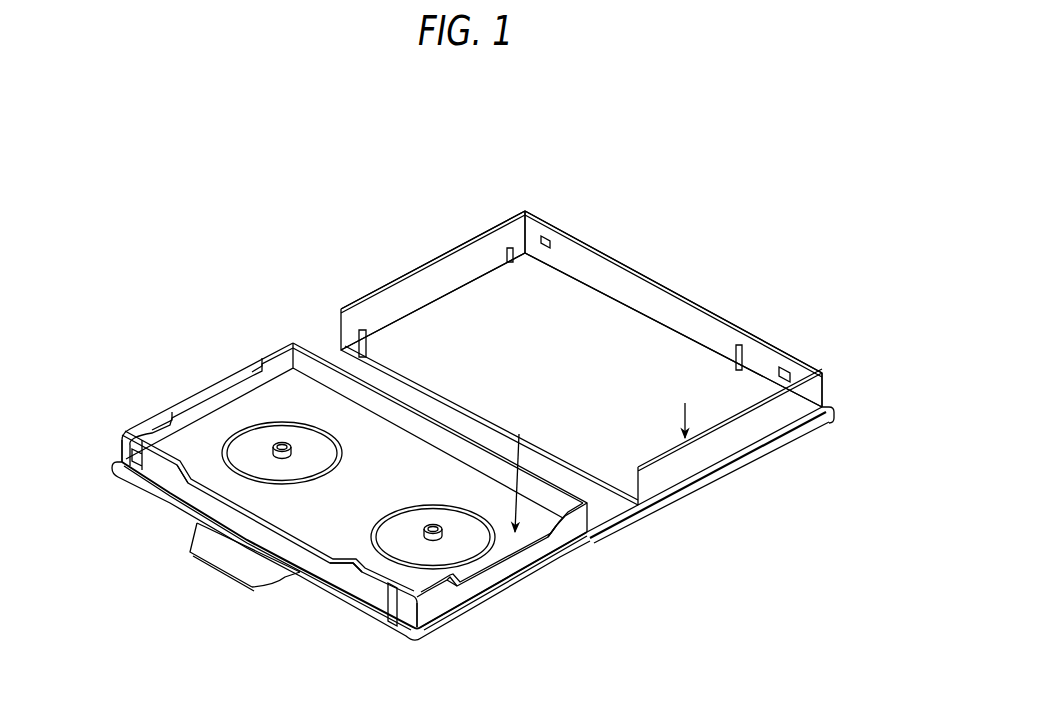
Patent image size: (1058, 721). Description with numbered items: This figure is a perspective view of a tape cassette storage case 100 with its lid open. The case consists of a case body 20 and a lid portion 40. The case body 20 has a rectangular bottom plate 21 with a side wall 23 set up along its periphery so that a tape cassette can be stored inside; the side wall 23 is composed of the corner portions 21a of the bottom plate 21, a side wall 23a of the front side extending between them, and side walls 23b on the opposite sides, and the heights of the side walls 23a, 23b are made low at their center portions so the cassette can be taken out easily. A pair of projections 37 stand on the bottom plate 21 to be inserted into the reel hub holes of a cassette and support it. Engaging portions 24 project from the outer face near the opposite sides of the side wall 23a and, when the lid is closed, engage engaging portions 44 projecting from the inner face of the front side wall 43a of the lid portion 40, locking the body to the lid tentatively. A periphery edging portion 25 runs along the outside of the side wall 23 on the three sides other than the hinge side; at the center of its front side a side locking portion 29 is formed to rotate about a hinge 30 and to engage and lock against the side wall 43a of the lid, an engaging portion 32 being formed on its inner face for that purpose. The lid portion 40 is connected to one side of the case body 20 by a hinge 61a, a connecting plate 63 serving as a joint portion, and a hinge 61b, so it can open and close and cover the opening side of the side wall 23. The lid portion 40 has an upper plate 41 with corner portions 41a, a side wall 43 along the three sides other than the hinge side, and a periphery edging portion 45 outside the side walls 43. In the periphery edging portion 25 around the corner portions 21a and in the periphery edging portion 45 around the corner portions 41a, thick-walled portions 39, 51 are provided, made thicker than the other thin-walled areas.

The tape cassette storage case 100 is at (296, 238).
The case body 20 is at (206, 364).
The bottom plate 21 is at (198, 433).
The corner portion 21a is at (103, 450).
The side wall 23 is at (270, 350).
The side wall of front side 23a is at (345, 585).
The side walls of opposite sides 23b is at (152, 418).
The engaging portion 24 is at (134, 448).
The periphery edging portion 25 is at (560, 574).
The side locking portion 29 is at (236, 582).
The hinge 30 is at (197, 522).
The engaging portion 32 is at (200, 560).
The projection 37 is at (382, 462).
The thick-walled portion 39 is at (116, 476).
The lid portion 40 is at (386, 248).
The upper plate 41 is at (645, 334).
The corner portion 41a is at (523, 204).
The side wall 43 is at (470, 228).
The side wall of front side 43a is at (633, 283).
The engaging portion 44 is at (550, 238).
The periphery edging portion 45 is at (738, 474).
The thick-walled portion 51 is at (810, 426).
The hinge 61a is at (600, 538).
The hinge 61b is at (640, 512).
The connecting plate 63 is at (622, 519).